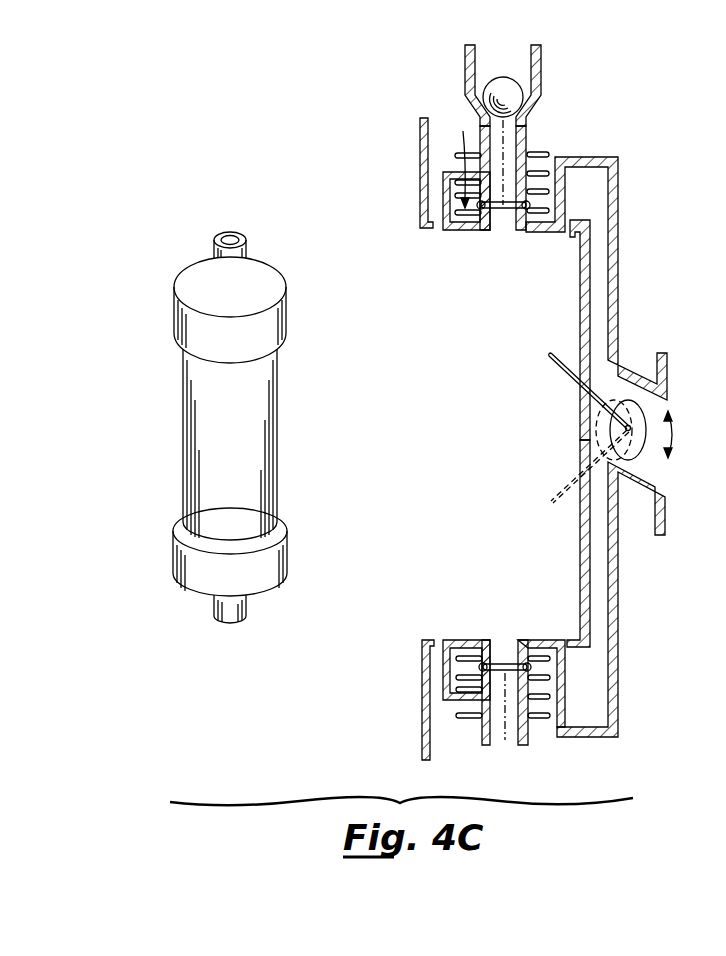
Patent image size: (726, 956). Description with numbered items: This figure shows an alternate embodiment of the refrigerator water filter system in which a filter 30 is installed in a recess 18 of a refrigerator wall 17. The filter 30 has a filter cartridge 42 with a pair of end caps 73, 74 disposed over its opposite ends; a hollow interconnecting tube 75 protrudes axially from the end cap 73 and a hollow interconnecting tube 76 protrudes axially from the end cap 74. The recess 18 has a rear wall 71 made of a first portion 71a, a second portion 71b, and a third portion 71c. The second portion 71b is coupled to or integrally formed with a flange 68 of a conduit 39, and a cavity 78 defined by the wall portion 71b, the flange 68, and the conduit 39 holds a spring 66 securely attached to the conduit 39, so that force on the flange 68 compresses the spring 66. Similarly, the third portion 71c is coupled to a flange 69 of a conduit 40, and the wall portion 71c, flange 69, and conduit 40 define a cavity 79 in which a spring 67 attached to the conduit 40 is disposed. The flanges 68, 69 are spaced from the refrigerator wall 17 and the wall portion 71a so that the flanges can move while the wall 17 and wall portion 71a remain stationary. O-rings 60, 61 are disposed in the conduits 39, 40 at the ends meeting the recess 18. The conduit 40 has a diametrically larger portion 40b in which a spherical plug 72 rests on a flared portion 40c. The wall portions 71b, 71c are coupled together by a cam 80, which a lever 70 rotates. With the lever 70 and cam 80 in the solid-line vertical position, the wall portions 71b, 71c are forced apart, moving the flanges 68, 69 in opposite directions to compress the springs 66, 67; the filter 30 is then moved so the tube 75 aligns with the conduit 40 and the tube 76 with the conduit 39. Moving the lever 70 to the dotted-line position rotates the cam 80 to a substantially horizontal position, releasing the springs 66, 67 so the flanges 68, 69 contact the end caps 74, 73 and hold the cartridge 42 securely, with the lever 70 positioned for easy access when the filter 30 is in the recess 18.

The filter 30 is at (207, 384).
The hollow interconnecting tube 75 is at (239, 234).
The end cap 73 is at (289, 312).
The filter cartridge 42 is at (281, 440).
The end cap 74 is at (291, 549).
The hollow interconnecting tube 76 is at (233, 624).
The recess 18 is at (445, 322).
The spherical plug 72 is at (503, 77).
The conduit 40 is at (478, 162).
The conduit portion 40b is at (541, 64).
The flared portion 40c is at (538, 110).
The refrigerator wall 17 is at (420, 150).
The cavity 79 is at (459, 159).
The spring 67 is at (543, 153).
The flange 69 is at (470, 232).
The O-ring 61 is at (503, 211).
The third portion of recess rear wall 71c is at (619, 258).
The first portion of recess rear wall 71a is at (580, 303).
The rear wall 71 is at (574, 572).
The second portion of recess rear wall 71b is at (620, 601).
The lever 70 is at (562, 373).
The cam 80 is at (647, 461).
The conduit 39 is at (528, 740).
The flange 68 is at (470, 645).
The spring 66 is at (468, 718).
The cavity 78 is at (546, 705).
The O-ring 60 is at (503, 663).